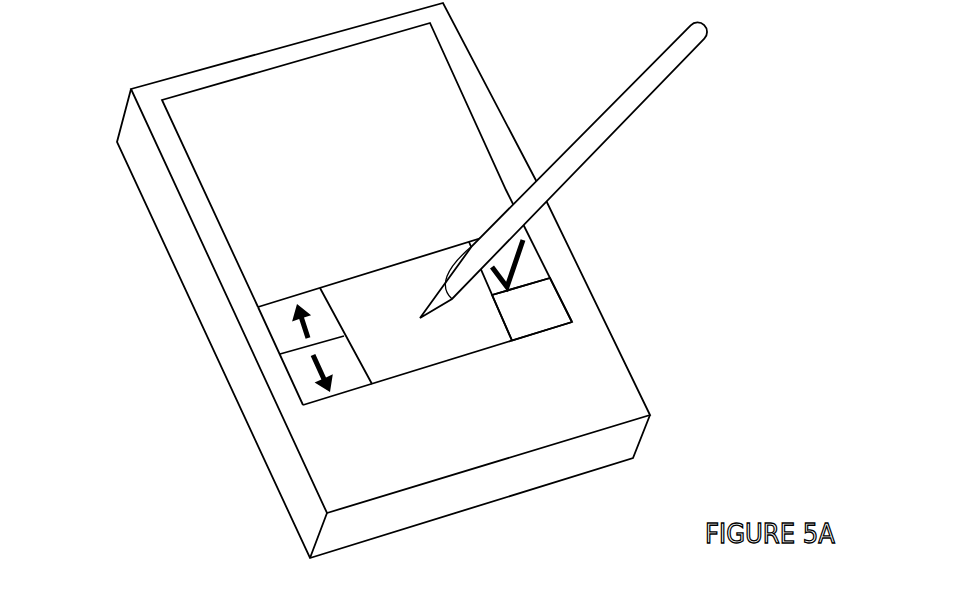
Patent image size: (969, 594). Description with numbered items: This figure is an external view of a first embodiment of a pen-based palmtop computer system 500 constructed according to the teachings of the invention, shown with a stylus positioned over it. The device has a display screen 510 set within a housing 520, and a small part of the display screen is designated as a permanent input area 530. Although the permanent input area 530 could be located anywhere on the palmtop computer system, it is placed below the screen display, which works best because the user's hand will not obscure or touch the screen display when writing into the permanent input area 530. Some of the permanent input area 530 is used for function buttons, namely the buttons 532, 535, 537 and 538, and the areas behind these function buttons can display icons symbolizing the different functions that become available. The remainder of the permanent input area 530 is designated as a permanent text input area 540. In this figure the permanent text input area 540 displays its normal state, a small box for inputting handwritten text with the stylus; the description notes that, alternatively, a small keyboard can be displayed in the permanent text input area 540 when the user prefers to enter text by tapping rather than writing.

The portable electronic device 500 is at (178, 523).
The display screen 510 is at (318, 143).
The housing frame 520 is at (466, 24).
The permanent input area 530 is at (567, 215).
The function button 532 is at (528, 267).
The function button 535 is at (284, 327).
The function button 537 is at (305, 383).
The function button 538 is at (532, 318).
The permanent text input area 540 is at (398, 390).